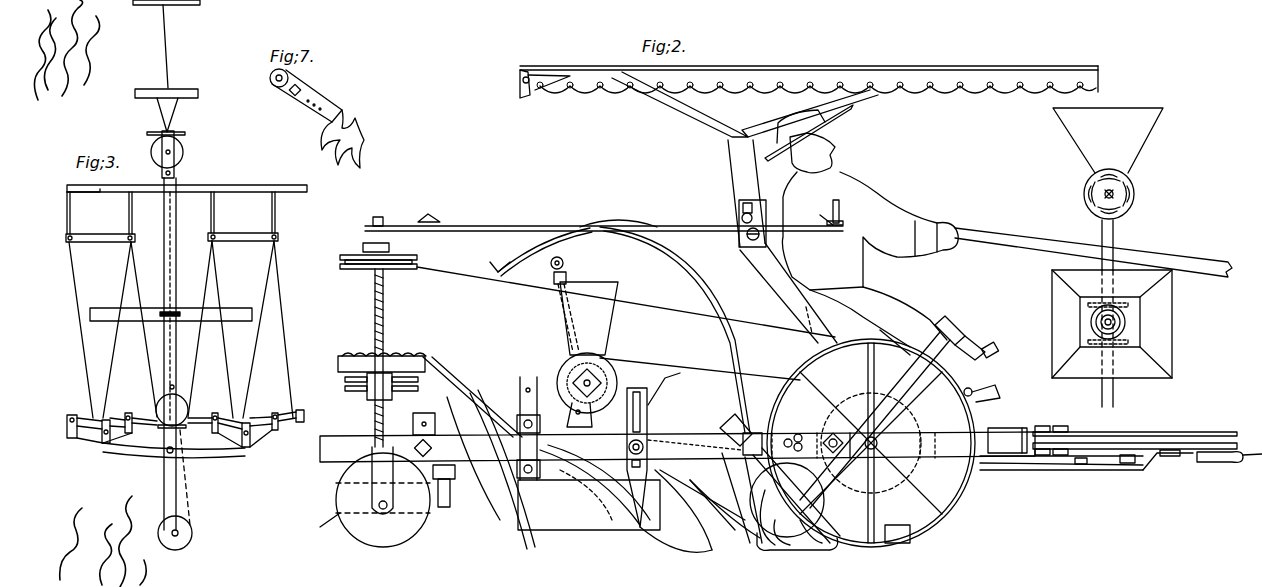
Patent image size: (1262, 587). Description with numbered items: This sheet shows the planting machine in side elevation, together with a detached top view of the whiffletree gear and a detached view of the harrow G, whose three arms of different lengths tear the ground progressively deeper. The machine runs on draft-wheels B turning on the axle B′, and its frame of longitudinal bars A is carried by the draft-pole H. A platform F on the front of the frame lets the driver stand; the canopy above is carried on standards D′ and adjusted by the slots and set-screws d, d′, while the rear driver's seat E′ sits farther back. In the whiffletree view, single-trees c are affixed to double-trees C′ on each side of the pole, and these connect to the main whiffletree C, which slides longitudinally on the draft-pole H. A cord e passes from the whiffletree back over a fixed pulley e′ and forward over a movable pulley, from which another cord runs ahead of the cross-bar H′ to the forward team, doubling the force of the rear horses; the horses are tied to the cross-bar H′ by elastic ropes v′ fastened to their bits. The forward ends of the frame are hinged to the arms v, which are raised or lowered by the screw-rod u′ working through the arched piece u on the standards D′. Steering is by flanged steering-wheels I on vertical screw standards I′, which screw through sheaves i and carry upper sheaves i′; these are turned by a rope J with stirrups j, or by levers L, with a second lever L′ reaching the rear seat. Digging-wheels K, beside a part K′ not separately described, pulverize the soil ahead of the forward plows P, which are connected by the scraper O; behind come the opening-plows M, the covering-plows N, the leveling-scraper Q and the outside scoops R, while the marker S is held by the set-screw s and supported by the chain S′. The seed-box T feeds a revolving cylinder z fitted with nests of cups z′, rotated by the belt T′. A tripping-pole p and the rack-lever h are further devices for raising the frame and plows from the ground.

In FIG. 3, the semicircular rack-lever h is at (166, 83).
In FIG. 3, the cross-bar H′ is at (187, 178).
In FIG. 3, the draft-pole H is at (176, 352).
In FIG. 2, the draft-pole H is at (1135, 434).
In FIG. 3, the arms v is at (172, 215).
In FIG. 3, the elastic rope v′ is at (212, 210).
In FIG. 3, the main whiffletree C is at (185, 431).
In FIG. 2, the main whiffletree C is at (1168, 470).
In FIG. 3, the double-tree C′ is at (174, 444).
In FIG. 3, the single-trees c is at (212, 409).
In FIG. 3, the cord or chain e is at (190, 477).
In FIG. 3, the fixed pulley e′ is at (186, 542).
In FIG. 7, the harrow G is at (321, 118).
In FIG. 2, the draft-wheels B is at (809, 75).
In FIG. 2, the set-screw d is at (745, 238).
In FIG. 2, the set-screw d′ is at (745, 210).
In FIG. 2, the standards D′ is at (788, 293).
In FIG. 2, the levers L is at (604, 219).
In FIG. 2, the second lever L′ is at (620, 330).
In FIG. 2, the rope or chain J is at (626, 302).
In FIG. 2, the belt T′ is at (700, 365).
In FIG. 2, the vertical screw standards I′ is at (386, 358).
In FIG. 2, the rear driver's seat E′ is at (380, 352).
In FIG. 2, the digging-wheels K is at (553, 458).
In FIG. 2, the sheaves i is at (455, 367).
In FIG. 2, the leveling-scraper Q is at (434, 460).
In FIG. 2, the steering-wheels I is at (375, 497).
In FIG. 2, the seed-box T is at (866, 243).
In FIG. 2, the sheaves i′ is at (565, 303).
In FIG. 2, the longitudinal bars A is at (677, 447).
In FIG. 2, the adjustable marker S is at (638, 457).
In FIG. 2, the set-screw s is at (659, 447).
In FIG. 2, the chain S′ is at (695, 415).
In FIG. 2, the covering-plows N is at (589, 487).
In FIG. 2, the outside scoops R is at (676, 511).
In FIG. 2, the arched piece u is at (784, 449).
In FIG. 2, the opening-plows M is at (725, 510).
In FIG. 2, the lever block K′ is at (780, 478).
In FIG. 2, the forward plows P is at (833, 528).
In FIG. 2, the tripping-pole p is at (834, 523).
In FIG. 2, the axle B′ is at (872, 443).
In FIG. 2, the screw-rod u′ is at (899, 406).
In FIG. 2, the stirrups j is at (984, 396).
In FIG. 2, the platform F is at (1007, 431).
In FIG. 2, the scraper O is at (1086, 472).
In FIG. 2, the roller z is at (1109, 201).
In FIG. 2, the roller part z′ is at (1078, 258).